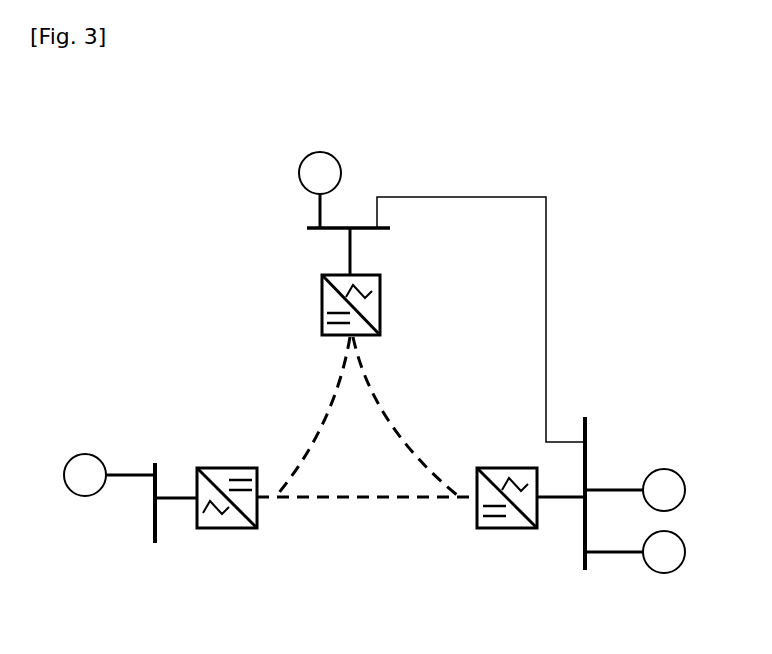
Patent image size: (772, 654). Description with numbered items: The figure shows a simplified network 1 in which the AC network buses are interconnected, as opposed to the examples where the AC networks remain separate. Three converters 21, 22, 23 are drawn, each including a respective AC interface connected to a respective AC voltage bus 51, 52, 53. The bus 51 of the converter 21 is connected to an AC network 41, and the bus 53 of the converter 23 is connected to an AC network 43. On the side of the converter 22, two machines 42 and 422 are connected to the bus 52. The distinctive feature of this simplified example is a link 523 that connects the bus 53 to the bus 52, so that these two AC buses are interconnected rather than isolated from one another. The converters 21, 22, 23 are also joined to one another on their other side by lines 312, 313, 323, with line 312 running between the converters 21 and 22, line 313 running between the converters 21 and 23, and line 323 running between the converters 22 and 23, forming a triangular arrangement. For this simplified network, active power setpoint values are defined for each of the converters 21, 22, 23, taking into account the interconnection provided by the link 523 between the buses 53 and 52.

The power system 1 is at (579, 144).
The converter 21 is at (227, 529).
The converter 22 is at (505, 529).
The converter 23 is at (322, 300).
The AC network 41 is at (82, 496).
The machine 42 is at (686, 490).
The machine 422 is at (665, 573).
The AC network 43 is at (299, 176).
The AC voltage bus 51 is at (155, 543).
The AC voltage bus 52 is at (585, 570).
The AC voltage bus 53 is at (307, 228).
The first DC line 312 is at (372, 500).
The second DC line 313 is at (320, 437).
The third DC line 323 is at (380, 430).
The link 523 is at (546, 292).